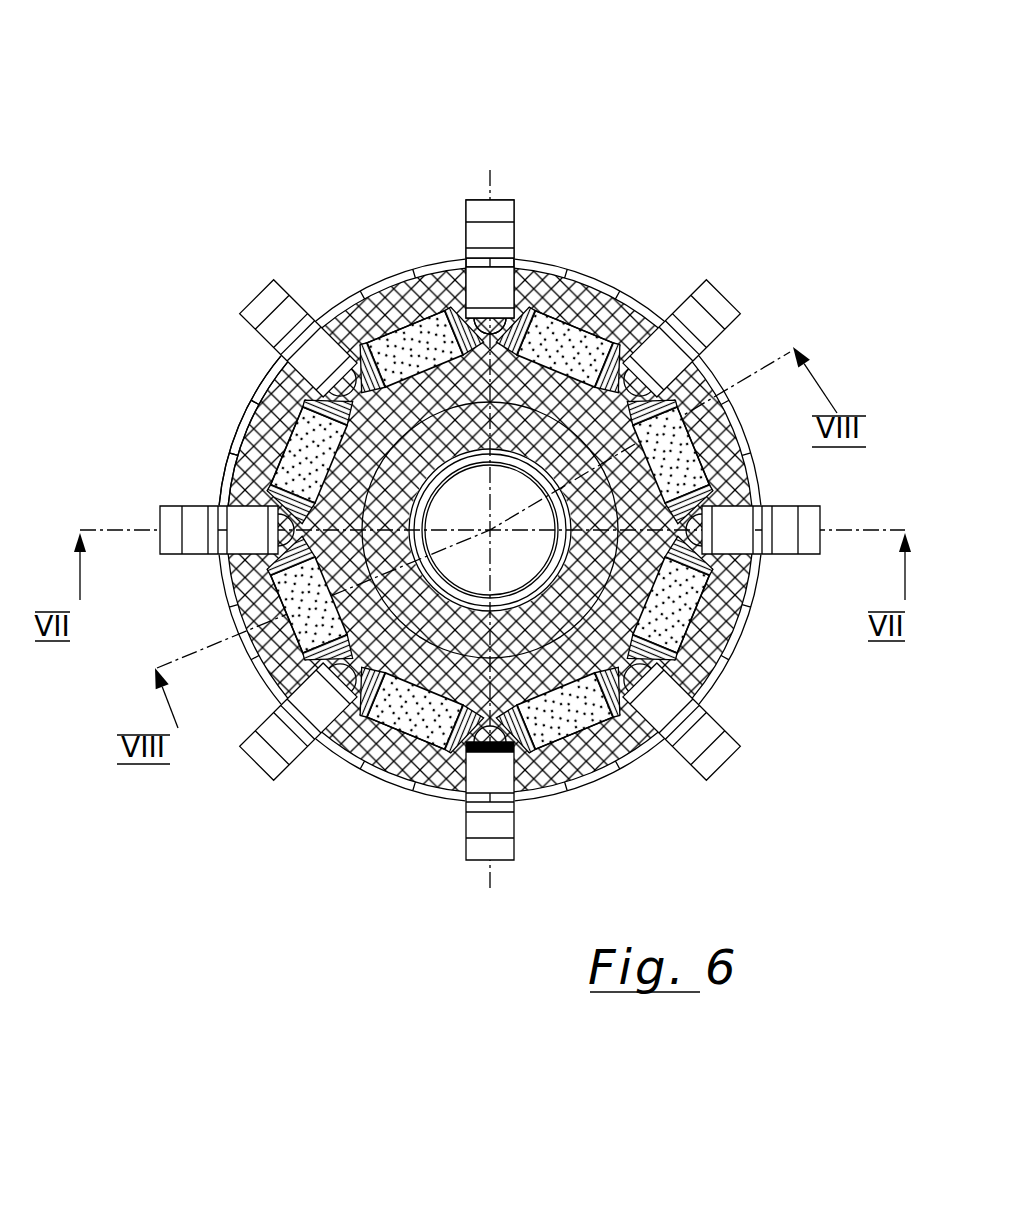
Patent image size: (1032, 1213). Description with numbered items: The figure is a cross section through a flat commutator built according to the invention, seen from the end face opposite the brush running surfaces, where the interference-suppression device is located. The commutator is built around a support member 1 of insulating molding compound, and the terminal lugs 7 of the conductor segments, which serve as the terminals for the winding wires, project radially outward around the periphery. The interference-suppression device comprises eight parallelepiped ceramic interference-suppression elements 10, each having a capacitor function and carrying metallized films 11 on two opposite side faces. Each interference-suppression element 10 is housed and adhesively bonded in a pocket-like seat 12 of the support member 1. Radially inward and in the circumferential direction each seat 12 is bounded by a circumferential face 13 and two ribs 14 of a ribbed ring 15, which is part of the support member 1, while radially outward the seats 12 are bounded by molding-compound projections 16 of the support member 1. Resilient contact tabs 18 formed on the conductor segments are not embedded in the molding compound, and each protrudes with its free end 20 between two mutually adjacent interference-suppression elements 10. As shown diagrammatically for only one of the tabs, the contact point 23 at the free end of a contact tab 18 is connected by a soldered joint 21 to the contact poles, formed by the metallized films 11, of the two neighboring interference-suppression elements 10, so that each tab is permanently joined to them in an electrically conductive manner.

The support member 1 is at (447, 618).
The terminal lugs 7 is at (466, 222).
The interference-suppression elements 10 is at (592, 298).
The metallized films 11 is at (548, 265).
The seat 12 is at (655, 368).
The circumferential face 13 is at (636, 320).
The ribs 14 is at (350, 392).
The ribbed ring 15 is at (280, 397).
The molding-compound projections 16 is at (273, 437).
The contact tabs 18 is at (500, 290).
The free end 20 is at (267, 483).
The soldered joint 21 is at (468, 788).
The contact point 23 is at (337, 688).